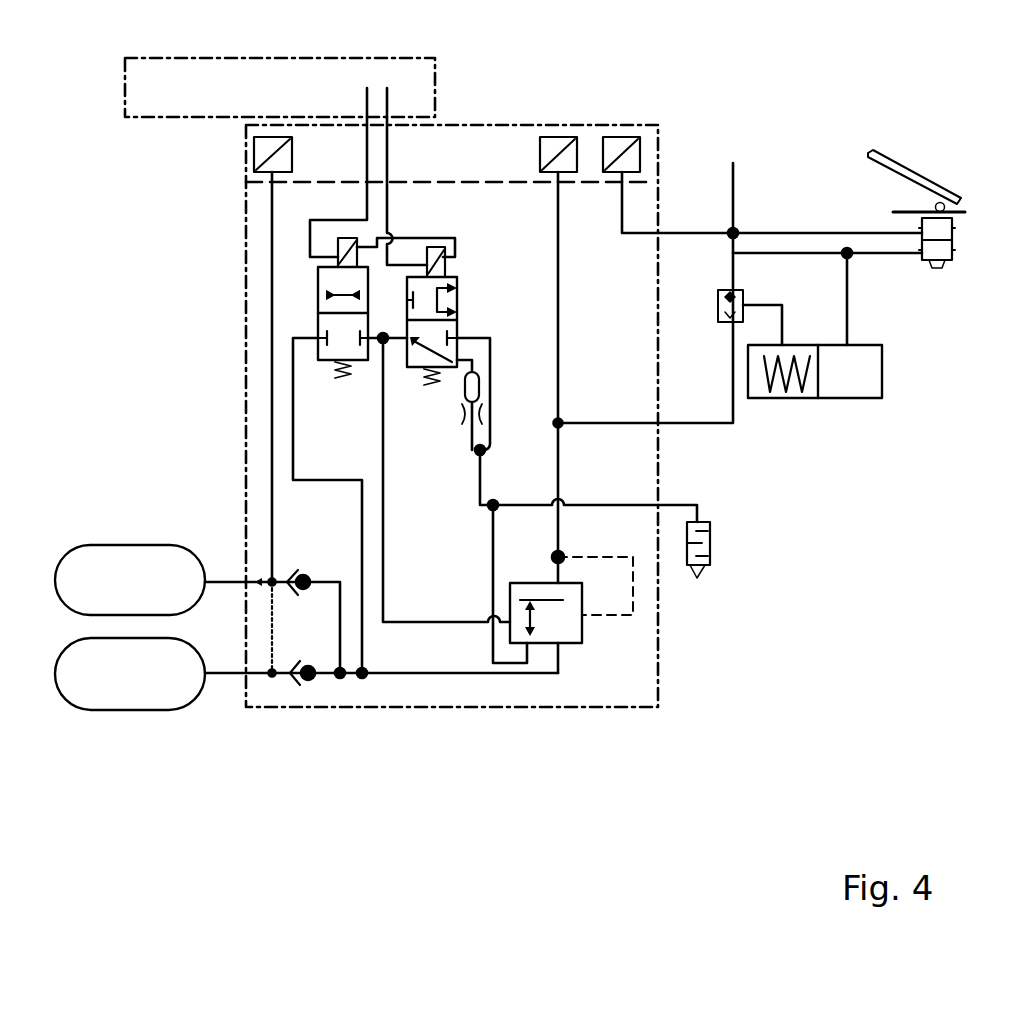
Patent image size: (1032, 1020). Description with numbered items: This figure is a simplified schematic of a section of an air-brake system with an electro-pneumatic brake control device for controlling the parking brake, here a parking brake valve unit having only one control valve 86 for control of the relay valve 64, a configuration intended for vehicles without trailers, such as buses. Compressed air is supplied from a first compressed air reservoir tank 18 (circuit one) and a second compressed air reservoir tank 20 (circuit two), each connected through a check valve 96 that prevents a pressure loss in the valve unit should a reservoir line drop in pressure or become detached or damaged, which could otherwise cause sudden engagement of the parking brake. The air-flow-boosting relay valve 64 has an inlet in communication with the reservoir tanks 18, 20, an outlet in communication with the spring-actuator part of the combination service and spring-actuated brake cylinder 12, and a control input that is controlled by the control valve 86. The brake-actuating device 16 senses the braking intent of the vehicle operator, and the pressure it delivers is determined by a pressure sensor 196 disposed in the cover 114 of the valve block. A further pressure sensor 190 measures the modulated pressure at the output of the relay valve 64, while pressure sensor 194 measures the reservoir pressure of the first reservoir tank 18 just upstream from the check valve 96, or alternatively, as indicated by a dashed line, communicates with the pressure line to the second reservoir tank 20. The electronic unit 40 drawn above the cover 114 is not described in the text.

The electronic control unit 40 is at (303, 60).
The cover 114 is at (485, 125).
The pressure sensor 194 is at (254, 160).
The pressure sensor 190 is at (560, 137).
The pressure sensor 196 is at (622, 137).
The combination service and spring-actuated brake cylinder 12 is at (794, 326).
The brake-actuating device 16 is at (958, 188).
The control valve 86 is at (396, 292).
The relay valve 64 is at (516, 583).
The check valve 96 is at (310, 575).
The first compressed air reservoir tank 18 is at (155, 546).
The second compressed air reservoir tank 20 is at (168, 706).